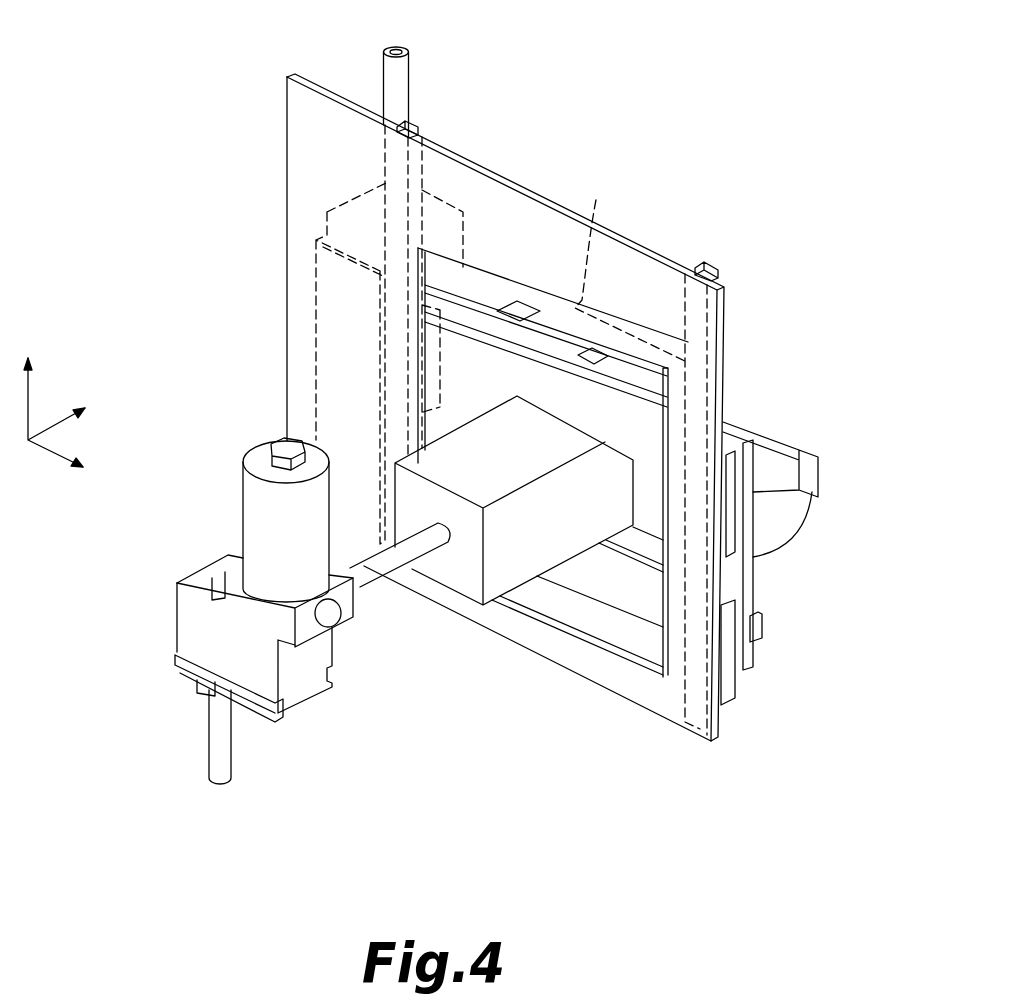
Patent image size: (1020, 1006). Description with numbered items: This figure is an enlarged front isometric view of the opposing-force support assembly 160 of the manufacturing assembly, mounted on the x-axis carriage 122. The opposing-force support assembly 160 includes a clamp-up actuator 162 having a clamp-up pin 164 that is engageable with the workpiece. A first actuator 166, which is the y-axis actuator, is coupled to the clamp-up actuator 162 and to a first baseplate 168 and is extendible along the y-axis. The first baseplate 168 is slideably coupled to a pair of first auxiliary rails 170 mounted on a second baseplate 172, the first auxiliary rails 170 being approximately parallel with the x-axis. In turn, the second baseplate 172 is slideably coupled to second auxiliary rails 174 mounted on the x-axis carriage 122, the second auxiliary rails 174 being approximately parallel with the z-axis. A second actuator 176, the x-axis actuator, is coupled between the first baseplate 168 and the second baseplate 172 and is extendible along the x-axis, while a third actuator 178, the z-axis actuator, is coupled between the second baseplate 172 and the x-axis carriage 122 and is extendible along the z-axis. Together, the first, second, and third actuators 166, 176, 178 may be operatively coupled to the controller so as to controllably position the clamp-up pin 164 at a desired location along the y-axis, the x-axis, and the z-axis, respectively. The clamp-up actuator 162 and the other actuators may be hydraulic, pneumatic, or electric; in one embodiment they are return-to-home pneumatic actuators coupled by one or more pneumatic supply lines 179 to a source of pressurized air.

The x-axis carriage 122 is at (338, 83).
The opposing-force support assembly 160 is at (163, 138).
The clamp-up actuator 162 is at (203, 578).
The clamp-up pin 164 is at (213, 728).
The first actuator 166 is at (467, 583).
The first baseplate 168 is at (588, 333).
The first auxiliary rails 170 is at (757, 630).
The second baseplate 172 is at (740, 442).
The second auxiliary rails 174 is at (417, 130).
The second actuator 176 is at (596, 200).
The third actuator 178 is at (445, 206).
The pneumatic supply lines 179 is at (402, 78).